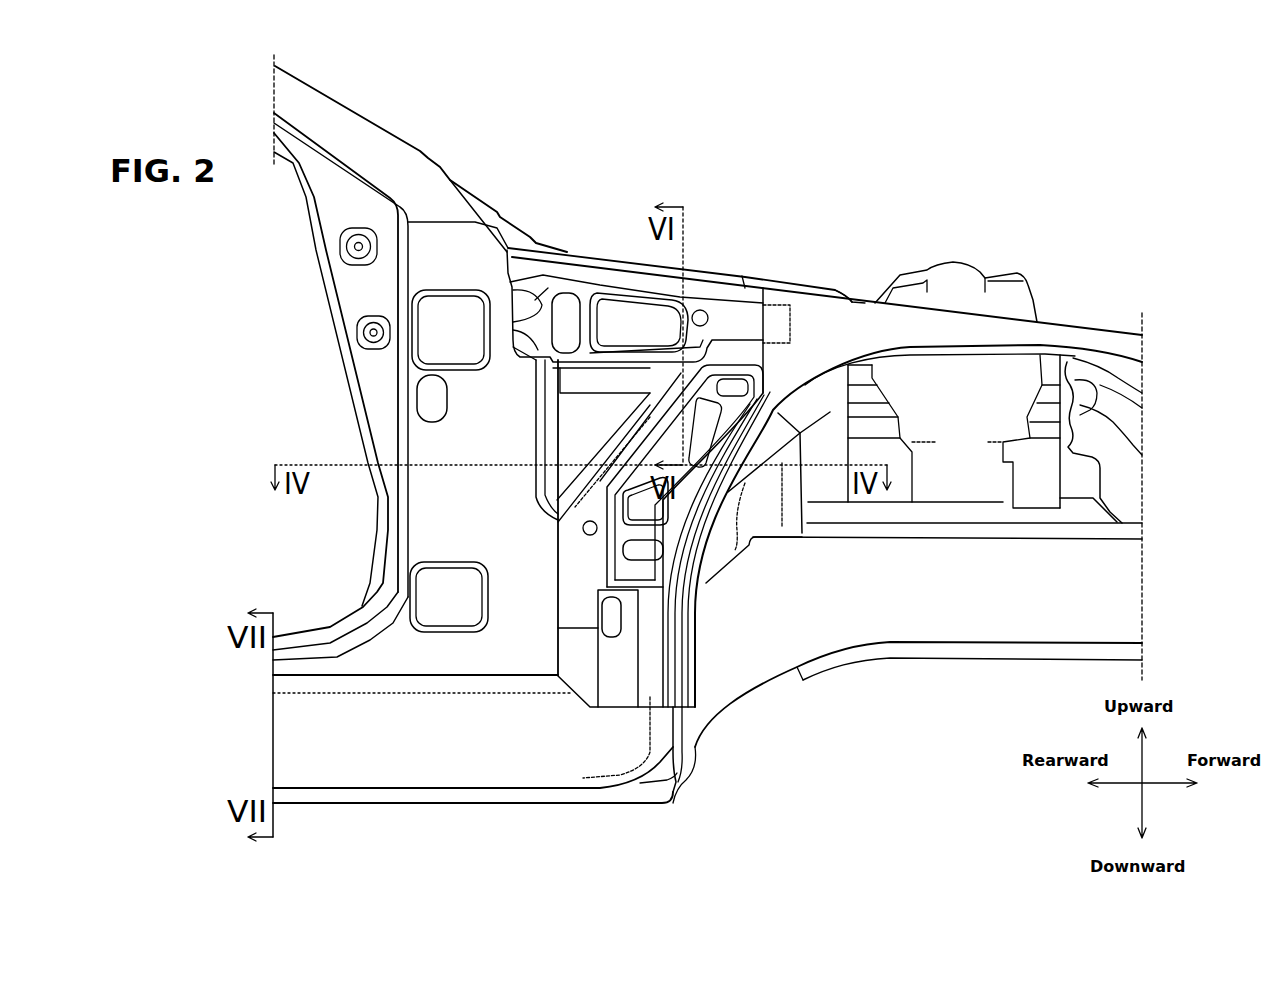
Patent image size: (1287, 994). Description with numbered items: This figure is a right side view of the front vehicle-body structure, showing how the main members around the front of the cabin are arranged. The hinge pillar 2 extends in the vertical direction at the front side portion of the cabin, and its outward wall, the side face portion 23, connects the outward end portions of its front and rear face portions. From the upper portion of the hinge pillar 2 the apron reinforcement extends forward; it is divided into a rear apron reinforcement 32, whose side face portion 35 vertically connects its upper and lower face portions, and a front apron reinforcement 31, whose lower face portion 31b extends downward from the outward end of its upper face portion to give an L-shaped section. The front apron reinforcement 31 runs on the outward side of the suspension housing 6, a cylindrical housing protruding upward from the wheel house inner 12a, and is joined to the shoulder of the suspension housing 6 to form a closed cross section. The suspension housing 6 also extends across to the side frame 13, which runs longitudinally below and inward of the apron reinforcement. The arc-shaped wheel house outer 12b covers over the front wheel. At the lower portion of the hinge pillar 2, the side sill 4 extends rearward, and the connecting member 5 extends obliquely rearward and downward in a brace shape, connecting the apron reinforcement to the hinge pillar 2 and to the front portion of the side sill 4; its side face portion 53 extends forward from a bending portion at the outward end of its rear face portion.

The hinge pillar 2 is at (447, 240).
The side face portion 23 is at (517, 485).
The rear apron reinforcement 32 is at (593, 280).
The side face portion 35 is at (508, 283).
The front apron reinforcement 31 is at (1062, 330).
The lower face portion 31b is at (845, 328).
The suspension housing 6 is at (948, 267).
The wheel house inner 12a is at (762, 513).
The wheel house outer 12b is at (673, 620).
The side frame 13 is at (950, 610).
The side face portion 53 is at (625, 652).
The side sill 4 is at (448, 777).
The connecting member 5 is at (583, 778).